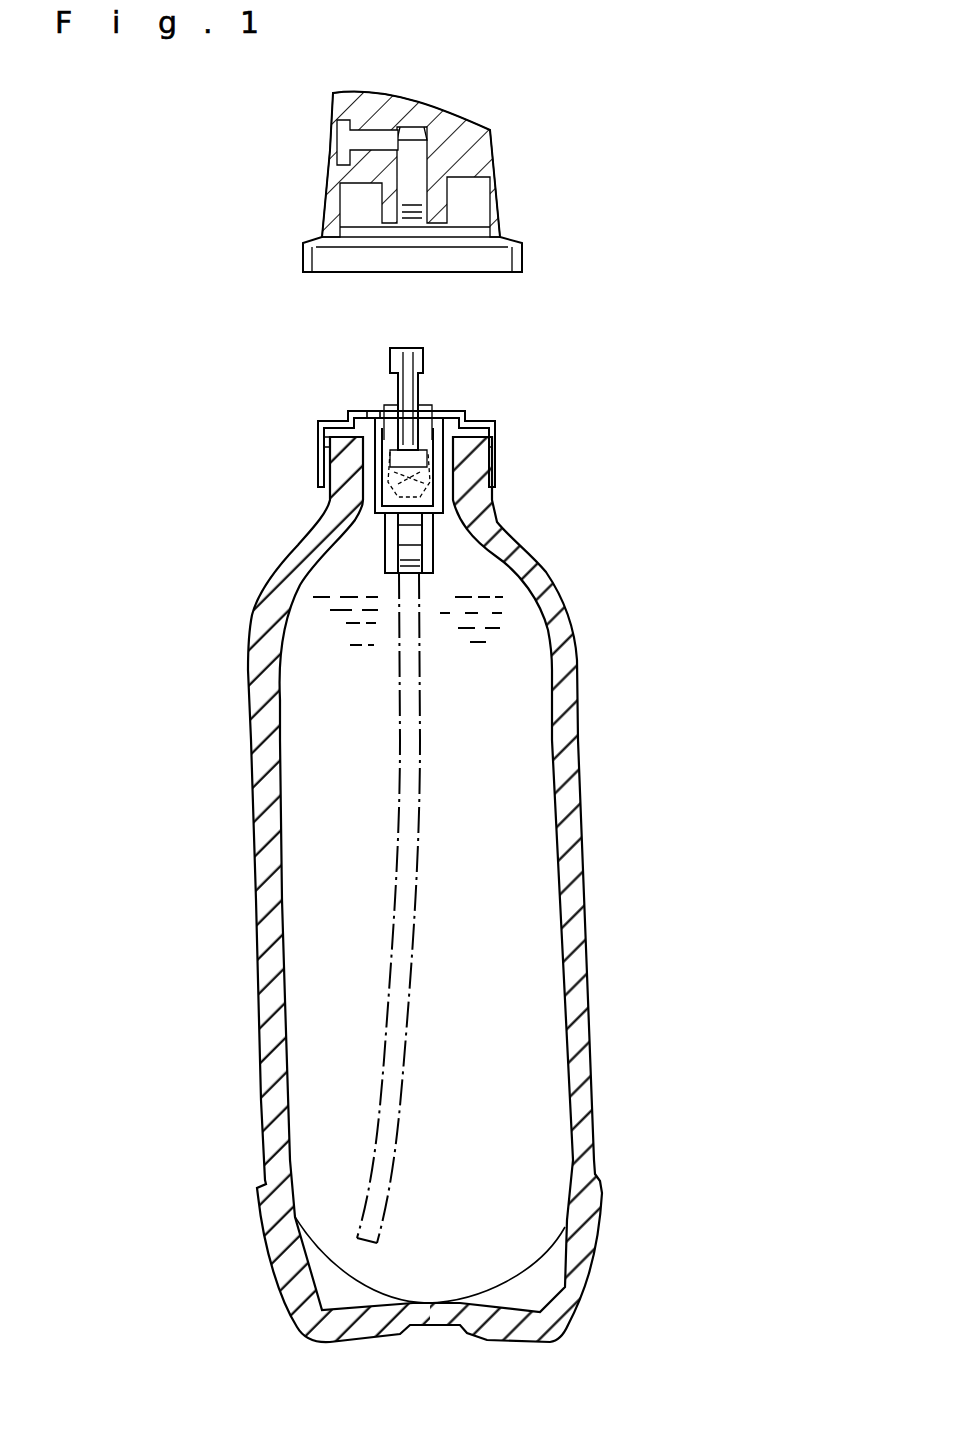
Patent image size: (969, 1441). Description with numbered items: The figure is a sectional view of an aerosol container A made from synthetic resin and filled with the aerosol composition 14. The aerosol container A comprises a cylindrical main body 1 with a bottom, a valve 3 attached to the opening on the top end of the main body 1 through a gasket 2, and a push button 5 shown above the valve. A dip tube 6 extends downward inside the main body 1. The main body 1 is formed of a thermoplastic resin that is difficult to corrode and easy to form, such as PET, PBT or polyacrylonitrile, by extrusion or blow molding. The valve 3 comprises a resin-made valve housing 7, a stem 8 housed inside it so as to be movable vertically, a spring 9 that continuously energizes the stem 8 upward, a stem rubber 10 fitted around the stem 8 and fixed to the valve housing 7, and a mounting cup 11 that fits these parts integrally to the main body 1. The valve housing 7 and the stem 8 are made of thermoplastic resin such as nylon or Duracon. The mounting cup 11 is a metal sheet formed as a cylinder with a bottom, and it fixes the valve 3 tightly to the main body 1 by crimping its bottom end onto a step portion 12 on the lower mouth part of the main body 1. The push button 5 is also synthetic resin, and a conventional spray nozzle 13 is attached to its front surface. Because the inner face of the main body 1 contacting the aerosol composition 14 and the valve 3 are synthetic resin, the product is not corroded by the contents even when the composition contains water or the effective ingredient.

The main body 1 is at (585, 690).
The gasket 2 is at (488, 428).
The valve 3 is at (448, 530).
The push button 5 is at (510, 200).
The dip tube 6 is at (403, 1012).
The valve housing 7 is at (440, 405).
The stem 8 is at (397, 398).
The spring 9 is at (330, 483).
The stem rubber 10 is at (345, 420).
The mounting cup 11 is at (325, 466).
The step portion 12 is at (335, 484).
The nozzle 13 is at (330, 152).
The aerosol composition 14 is at (365, 763).
The aerosol container A is at (605, 858).